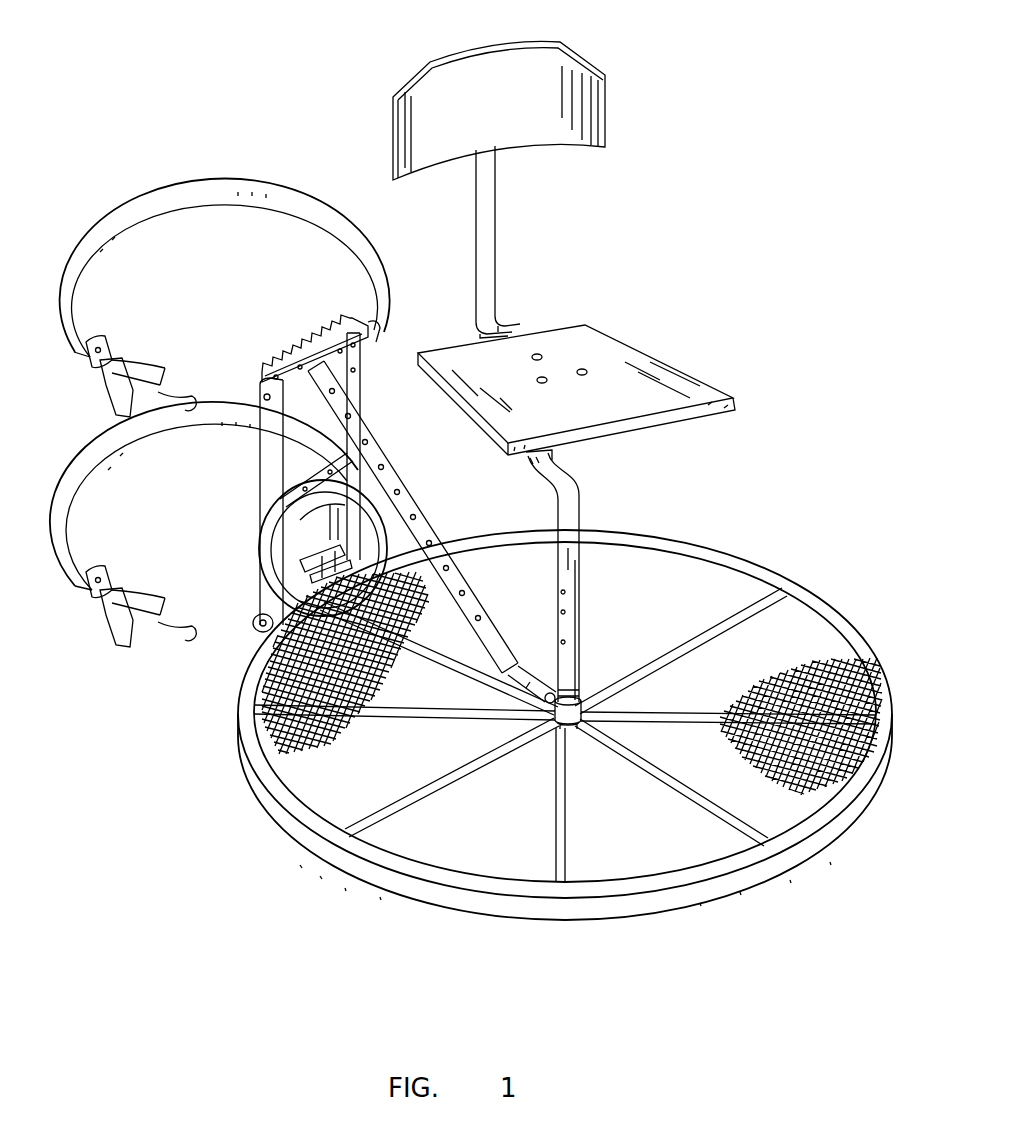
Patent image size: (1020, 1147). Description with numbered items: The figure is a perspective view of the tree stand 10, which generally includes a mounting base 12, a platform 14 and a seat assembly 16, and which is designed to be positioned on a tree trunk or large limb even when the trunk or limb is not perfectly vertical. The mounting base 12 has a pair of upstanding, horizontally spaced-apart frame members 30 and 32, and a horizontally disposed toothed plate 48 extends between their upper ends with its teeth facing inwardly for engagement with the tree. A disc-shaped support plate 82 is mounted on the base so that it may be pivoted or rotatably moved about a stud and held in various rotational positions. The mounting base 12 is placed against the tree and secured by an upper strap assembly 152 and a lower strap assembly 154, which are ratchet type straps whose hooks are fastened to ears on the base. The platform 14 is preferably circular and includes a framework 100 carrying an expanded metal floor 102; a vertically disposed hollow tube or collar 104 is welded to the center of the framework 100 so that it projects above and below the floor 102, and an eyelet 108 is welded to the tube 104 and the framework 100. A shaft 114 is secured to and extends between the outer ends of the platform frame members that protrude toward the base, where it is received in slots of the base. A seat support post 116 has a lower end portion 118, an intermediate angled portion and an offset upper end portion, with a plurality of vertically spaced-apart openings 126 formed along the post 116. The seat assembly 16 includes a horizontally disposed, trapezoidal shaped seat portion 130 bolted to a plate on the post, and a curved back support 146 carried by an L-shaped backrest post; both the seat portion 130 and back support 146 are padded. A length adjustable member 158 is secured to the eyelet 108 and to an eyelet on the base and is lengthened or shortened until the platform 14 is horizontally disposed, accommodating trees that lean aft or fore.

The tree stand 10 is at (762, 318).
The mounting base 12 is at (246, 482).
The platform 14 is at (775, 548).
The seat assembly 16 is at (505, 272).
The frame member 30 is at (258, 510).
The frame member 32 is at (358, 392).
The toothed plate 48 is at (320, 337).
The support plate 82 is at (348, 515).
The framework 100 is at (542, 812).
The expanded metal floor 102 is at (858, 652).
The tube 104 is at (622, 690).
The eyelet 108 is at (548, 718).
The shaft 114 is at (300, 562).
The seat support post 116 is at (600, 502).
The lower end portion 118 is at (566, 562).
The openings 126 is at (585, 605).
The seat portion 130 is at (625, 375).
The back support 146 is at (578, 112).
The upper strap assembly 152 is at (260, 172).
The lower strap assembly 154 is at (70, 465).
The length adjustable member 158 is at (452, 518).